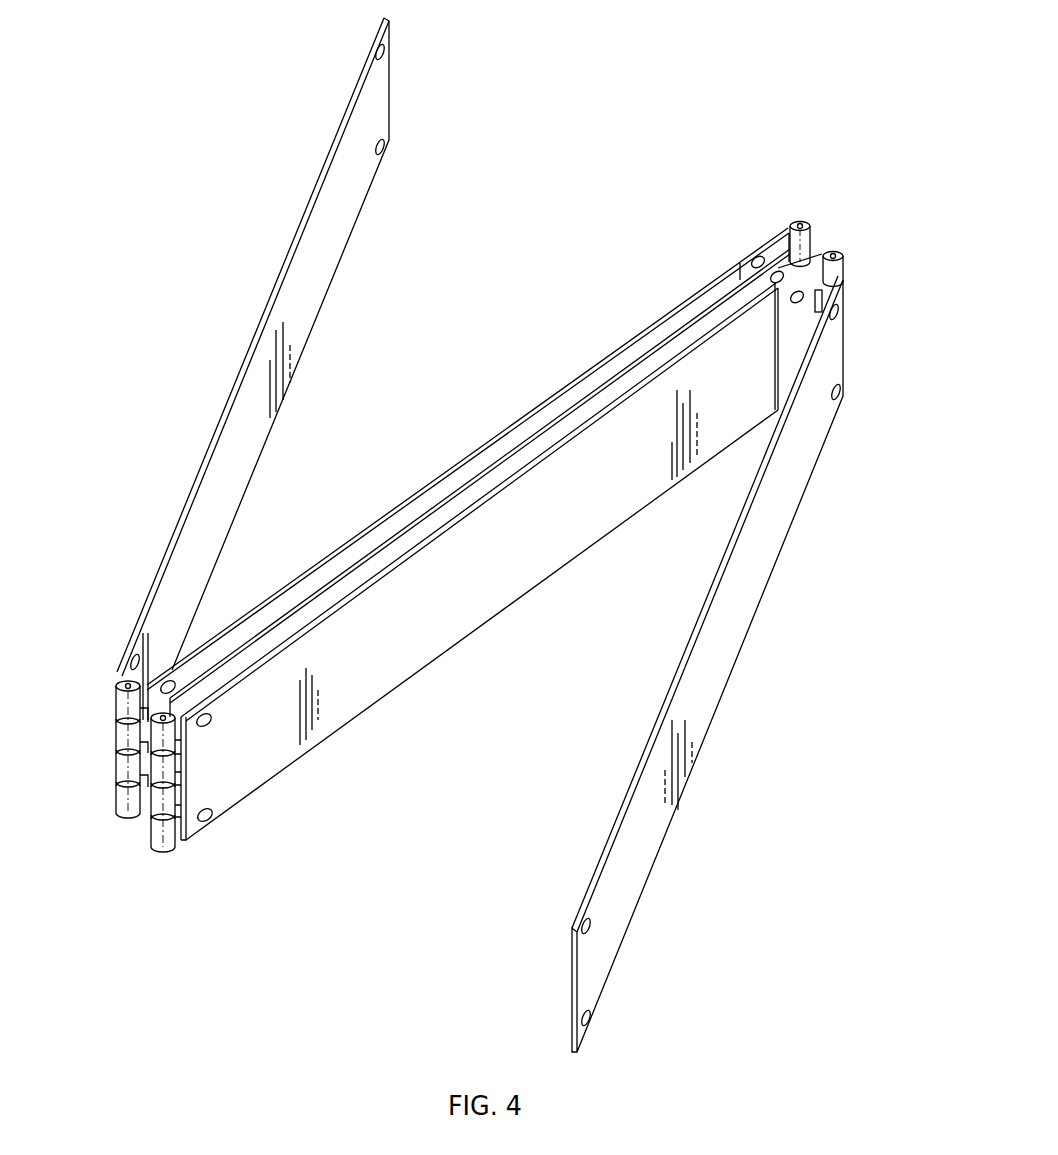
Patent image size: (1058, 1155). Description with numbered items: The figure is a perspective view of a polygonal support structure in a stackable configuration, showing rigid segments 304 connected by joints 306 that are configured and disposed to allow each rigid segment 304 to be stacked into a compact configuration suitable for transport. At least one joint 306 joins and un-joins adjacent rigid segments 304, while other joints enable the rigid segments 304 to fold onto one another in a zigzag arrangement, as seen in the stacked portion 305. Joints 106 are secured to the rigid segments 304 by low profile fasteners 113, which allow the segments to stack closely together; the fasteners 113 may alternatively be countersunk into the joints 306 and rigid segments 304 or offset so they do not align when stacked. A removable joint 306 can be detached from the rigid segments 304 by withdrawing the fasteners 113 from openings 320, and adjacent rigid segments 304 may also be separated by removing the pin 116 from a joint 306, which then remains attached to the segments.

The pin 116 is at (120, 676).
The low profile fasteners 113 is at (212, 818).
The joints 106 is at (123, 779).
The stacked portion 305 is at (162, 862).
The joints 306 is at (798, 221).
The rigid segments 304 is at (707, 664).
The openings 320 is at (590, 1021).